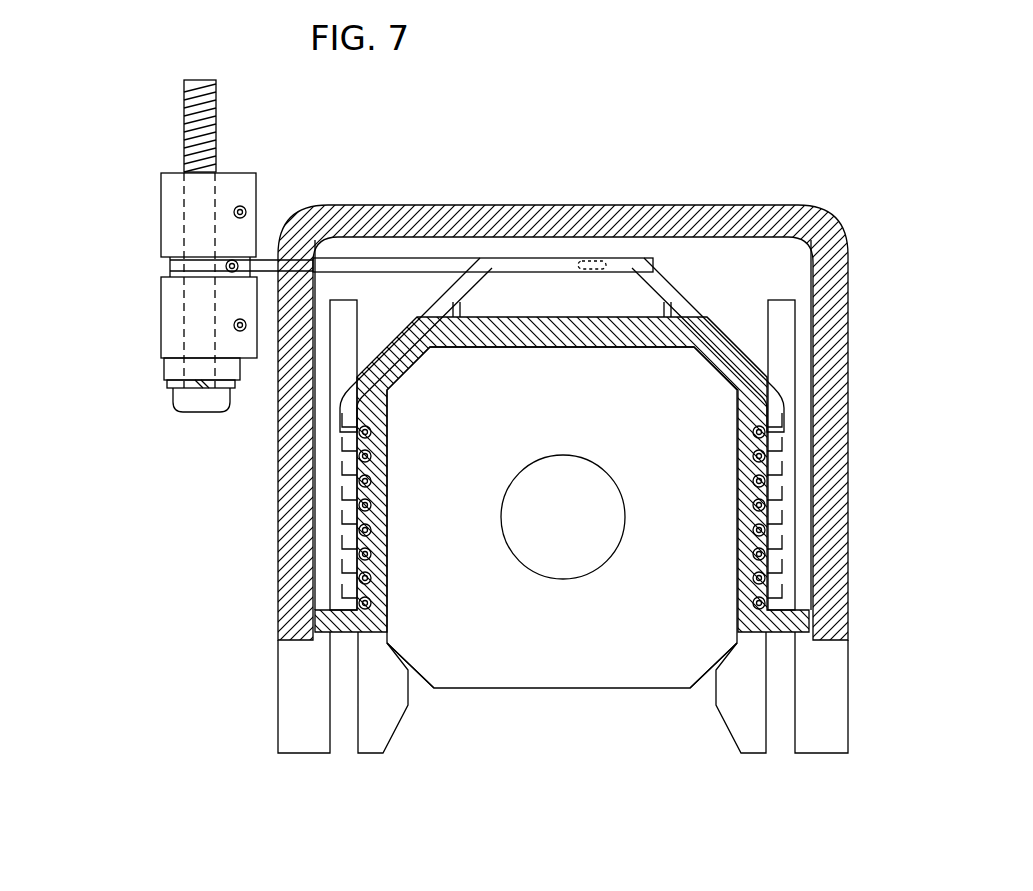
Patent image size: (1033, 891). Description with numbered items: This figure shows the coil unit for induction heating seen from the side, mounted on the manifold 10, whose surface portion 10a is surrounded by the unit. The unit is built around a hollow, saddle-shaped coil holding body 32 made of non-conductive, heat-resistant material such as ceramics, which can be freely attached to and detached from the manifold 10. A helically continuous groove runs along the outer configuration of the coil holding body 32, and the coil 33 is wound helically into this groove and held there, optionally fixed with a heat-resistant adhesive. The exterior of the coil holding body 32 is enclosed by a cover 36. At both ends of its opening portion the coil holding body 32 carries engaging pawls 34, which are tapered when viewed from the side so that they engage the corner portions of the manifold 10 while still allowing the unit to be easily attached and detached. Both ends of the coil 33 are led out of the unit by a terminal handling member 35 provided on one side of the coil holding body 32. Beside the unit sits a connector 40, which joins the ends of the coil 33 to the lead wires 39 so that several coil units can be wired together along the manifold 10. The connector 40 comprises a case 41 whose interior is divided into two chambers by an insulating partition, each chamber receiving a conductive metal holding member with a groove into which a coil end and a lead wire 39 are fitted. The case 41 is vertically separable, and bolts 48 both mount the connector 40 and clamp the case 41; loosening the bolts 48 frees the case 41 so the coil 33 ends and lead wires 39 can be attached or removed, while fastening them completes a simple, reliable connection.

The manifold 10 is at (626, 398).
The cover of heat block 10a is at (503, 345).
The coil holding body 32 is at (744, 316).
The coil 33 is at (391, 262).
The engaging pawls 34 is at (380, 705).
The terminal handling member 35 is at (570, 295).
The cover 36 is at (722, 222).
The lead wires 39 is at (232, 273).
The connector 40 is at (152, 210).
The case 41 is at (232, 183).
The bolts 48 is at (205, 125).